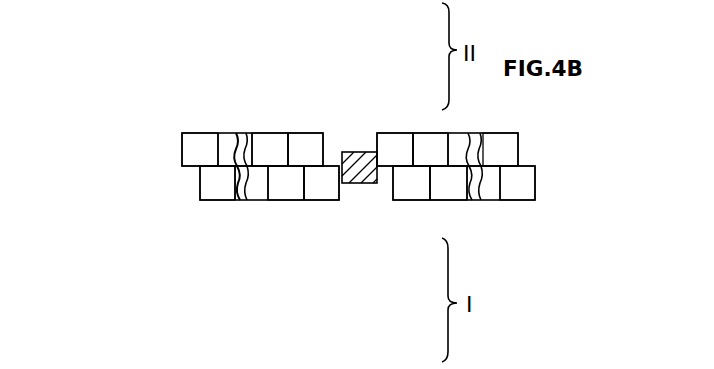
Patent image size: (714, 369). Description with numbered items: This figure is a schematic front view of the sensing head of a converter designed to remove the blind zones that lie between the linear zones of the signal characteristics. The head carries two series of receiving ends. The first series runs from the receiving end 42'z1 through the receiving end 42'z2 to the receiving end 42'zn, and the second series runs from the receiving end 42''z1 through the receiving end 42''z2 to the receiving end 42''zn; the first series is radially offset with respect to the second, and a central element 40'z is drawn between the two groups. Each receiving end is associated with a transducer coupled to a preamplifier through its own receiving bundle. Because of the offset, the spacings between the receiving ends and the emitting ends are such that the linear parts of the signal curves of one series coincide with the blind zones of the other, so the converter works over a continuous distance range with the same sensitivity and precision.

The center tooth / pole piece 40'z is at (359, 188).
The receiving end 42''zn is at (359, 110).
The receiving end 42''z2 is at (358, 132).
The receiving end 42''z1 is at (358, 152).
The receiving end 42'z1 is at (359, 202).
The receiving end 42'z2 is at (359, 226).
The receiving end 42'zn is at (358, 248).